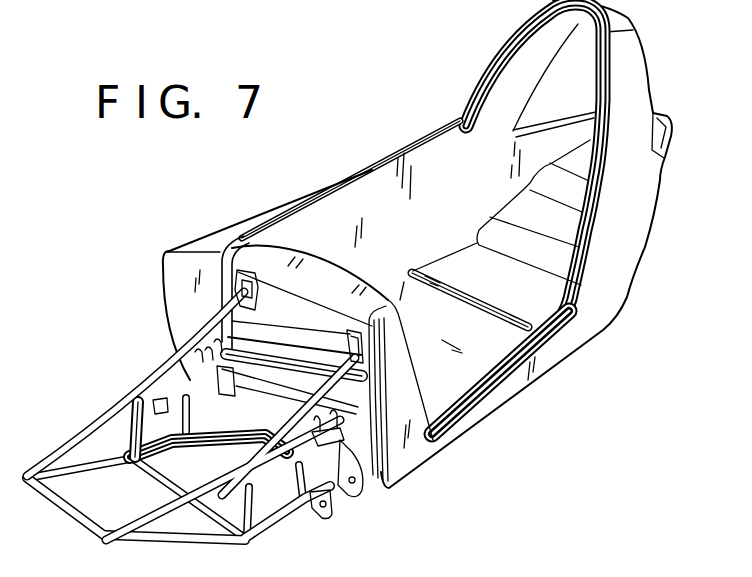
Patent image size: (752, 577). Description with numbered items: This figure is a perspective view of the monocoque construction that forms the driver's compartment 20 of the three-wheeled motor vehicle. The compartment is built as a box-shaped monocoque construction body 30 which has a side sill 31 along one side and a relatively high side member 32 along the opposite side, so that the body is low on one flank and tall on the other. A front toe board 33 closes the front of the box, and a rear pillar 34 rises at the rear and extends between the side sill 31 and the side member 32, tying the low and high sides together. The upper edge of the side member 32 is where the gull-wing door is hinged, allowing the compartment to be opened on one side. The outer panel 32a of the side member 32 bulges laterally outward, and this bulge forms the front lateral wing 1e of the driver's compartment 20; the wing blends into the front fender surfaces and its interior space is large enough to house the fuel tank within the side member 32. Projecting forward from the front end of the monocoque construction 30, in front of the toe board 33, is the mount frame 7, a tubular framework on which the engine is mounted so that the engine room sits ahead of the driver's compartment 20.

The front lateral wing 1e is at (200, 240).
The mount frame 7 is at (98, 428).
The driver's compartment 20 is at (395, 174).
The monocoque construction body 30 is at (538, 396).
The side sill 31 is at (502, 397).
The side member 32 is at (364, 197).
The outer panel 32a is at (261, 221).
The front toe board 33 is at (338, 282).
The rear pillar 34 is at (506, 78).